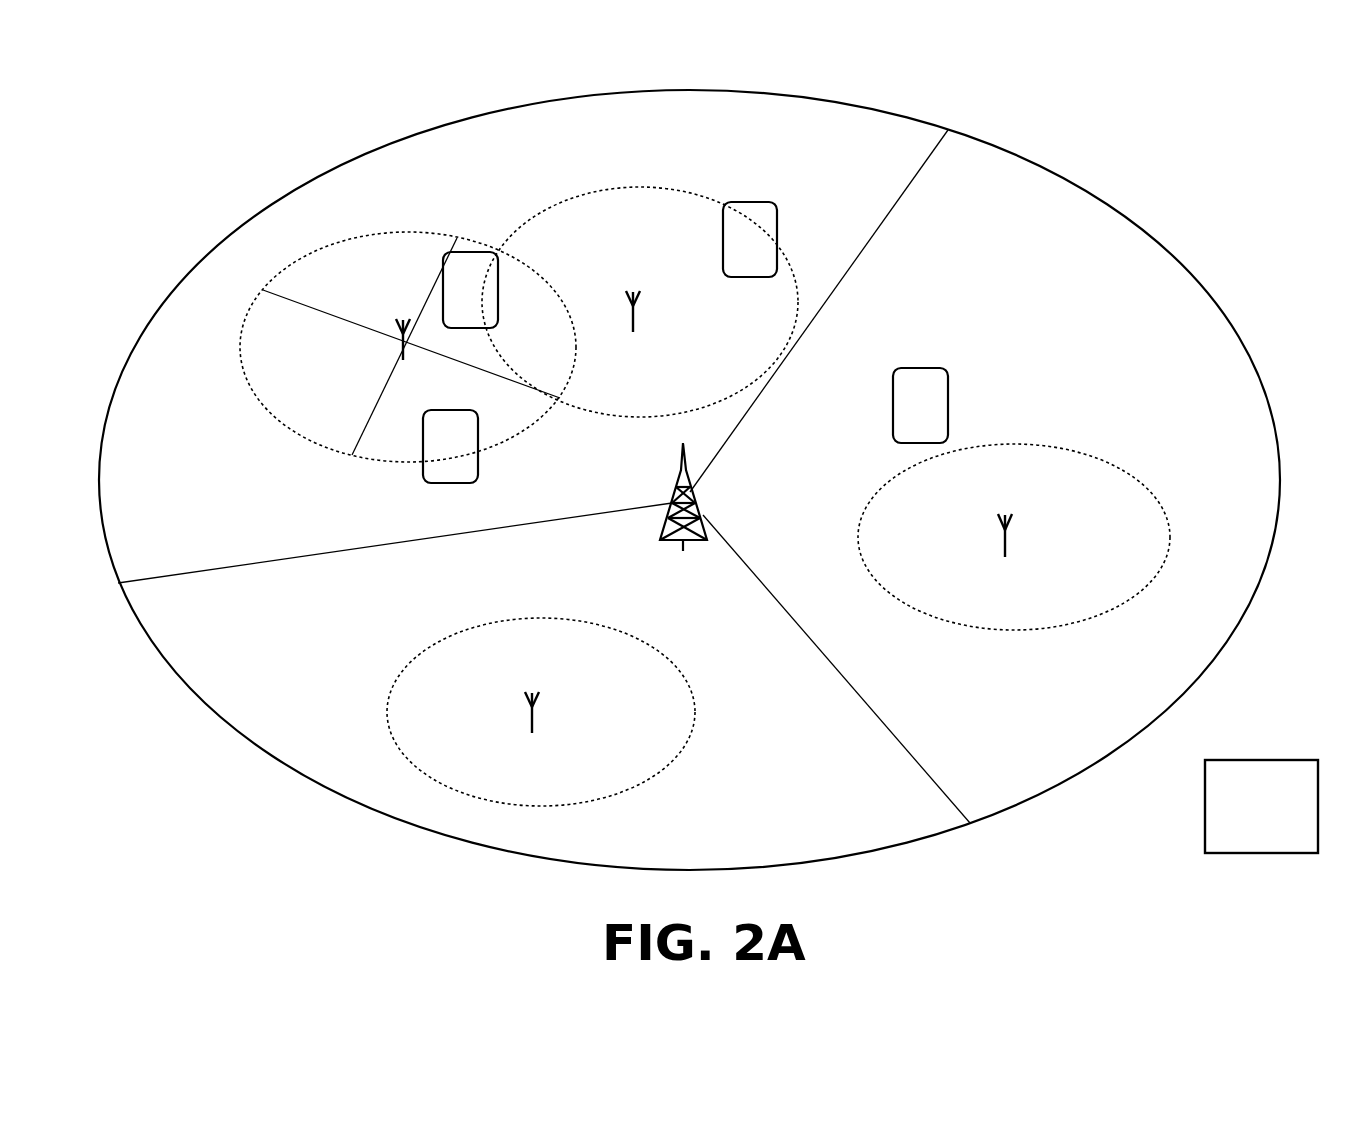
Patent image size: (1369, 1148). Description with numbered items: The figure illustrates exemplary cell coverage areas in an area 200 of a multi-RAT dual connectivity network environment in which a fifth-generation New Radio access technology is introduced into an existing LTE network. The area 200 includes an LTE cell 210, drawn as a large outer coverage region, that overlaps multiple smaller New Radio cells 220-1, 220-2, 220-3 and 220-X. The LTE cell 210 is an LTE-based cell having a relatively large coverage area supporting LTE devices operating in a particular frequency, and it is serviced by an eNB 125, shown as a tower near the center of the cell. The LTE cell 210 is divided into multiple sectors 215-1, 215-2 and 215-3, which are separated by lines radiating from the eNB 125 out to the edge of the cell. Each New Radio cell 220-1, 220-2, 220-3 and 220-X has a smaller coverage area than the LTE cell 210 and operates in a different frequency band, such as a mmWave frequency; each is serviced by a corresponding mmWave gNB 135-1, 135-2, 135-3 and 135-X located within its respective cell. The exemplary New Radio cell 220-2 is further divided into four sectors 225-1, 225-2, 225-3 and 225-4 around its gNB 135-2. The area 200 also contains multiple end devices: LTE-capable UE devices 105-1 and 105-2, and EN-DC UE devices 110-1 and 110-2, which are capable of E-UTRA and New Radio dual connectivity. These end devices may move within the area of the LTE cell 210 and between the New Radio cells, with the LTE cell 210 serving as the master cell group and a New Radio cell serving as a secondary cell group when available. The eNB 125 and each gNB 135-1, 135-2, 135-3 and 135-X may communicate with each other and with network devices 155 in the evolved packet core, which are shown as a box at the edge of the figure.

The area 200 is at (176, 82).
The 4G cell 210 is at (166, 292).
The sector 215-1 is at (176, 544).
The sector 215-2 is at (247, 674).
The sector 215-3 is at (1027, 772).
The 5G cell 220-1 is at (682, 190).
The 5G cell 220-2 is at (262, 403).
The 5G cell 220-3 is at (672, 765).
The 5G cell 220-X is at (1113, 468).
The sector 225-1 is at (345, 289).
The sector 225-2 is at (359, 442).
The sector 225-3 is at (539, 417).
The sector 225-4 is at (532, 364).
The EN-DC UE device 110-1 is at (443, 283).
The EN-DC UE device 110-2 is at (423, 443).
The 4G UE device 105-1 is at (777, 215).
The 4G UE device 105-2 is at (948, 380).
The mmWave gNB 135-1 is at (636, 322).
The mmWave gNB 135-2 is at (401, 345).
The mmWave gNB 135-3 is at (535, 722).
The mmWave gNB 135-X is at (1008, 548).
The eNB 125 is at (700, 512).
The network devices 155 is at (1245, 846).